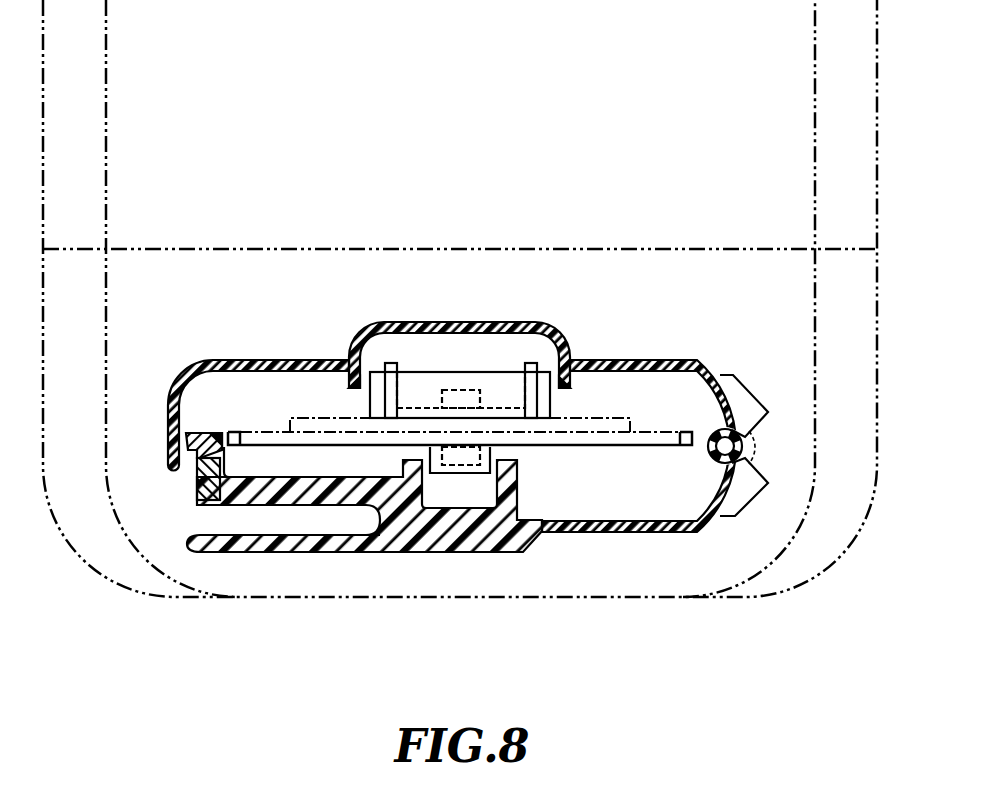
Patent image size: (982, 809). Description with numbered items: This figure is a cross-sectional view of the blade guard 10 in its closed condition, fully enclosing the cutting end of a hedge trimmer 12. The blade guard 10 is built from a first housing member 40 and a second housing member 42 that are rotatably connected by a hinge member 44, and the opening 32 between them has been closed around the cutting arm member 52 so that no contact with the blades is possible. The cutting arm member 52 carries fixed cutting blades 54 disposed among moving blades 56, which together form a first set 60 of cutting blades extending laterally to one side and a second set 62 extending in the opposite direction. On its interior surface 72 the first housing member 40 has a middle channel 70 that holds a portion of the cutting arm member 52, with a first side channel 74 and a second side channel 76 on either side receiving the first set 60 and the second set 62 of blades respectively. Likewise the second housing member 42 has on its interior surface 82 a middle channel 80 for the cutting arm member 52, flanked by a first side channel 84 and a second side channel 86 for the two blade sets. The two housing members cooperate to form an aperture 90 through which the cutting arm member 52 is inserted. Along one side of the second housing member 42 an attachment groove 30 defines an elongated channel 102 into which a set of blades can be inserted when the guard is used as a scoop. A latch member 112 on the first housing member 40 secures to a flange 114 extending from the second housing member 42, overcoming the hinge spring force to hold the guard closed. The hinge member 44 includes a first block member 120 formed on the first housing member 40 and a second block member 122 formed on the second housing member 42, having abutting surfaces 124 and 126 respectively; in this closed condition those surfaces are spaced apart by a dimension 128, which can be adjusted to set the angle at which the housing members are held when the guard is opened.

The blade guard 10 is at (669, 349).
The hedge trimmer 12 is at (444, 87).
The attachment groove 30 is at (228, 521).
The opening 32 is at (628, 472).
The first housing member 40 is at (563, 325).
The second housing member 42 is at (528, 553).
The hinge member 44 is at (762, 452).
The cutting arm member 52 is at (421, 402).
The fixed cutting blades 54 is at (273, 428).
The moving blades 56 is at (321, 412).
The first set of cutting blades 60 is at (657, 454).
The second set of cutting blades 62 is at (305, 448).
The middle channel 70 is at (458, 322).
The interior surface 72 is at (468, 360).
The first side channel 74 is at (297, 361).
The second side channel 76 is at (623, 360).
The middle channel 80 is at (472, 510).
The interior surface 82 is at (537, 512).
The first side channel 84 is at (350, 476).
The second side channel 86 is at (680, 530).
The aperture 90 is at (543, 399).
The elongated channel 102 is at (313, 518).
The latch member 112 is at (168, 446).
The flange 114 is at (208, 432).
The first block member 120 is at (742, 398).
The second block member 122 is at (745, 493).
The abutting surface 124 is at (761, 428).
The abutting surface 126 is at (762, 466).
The dimension 128 is at (761, 440).